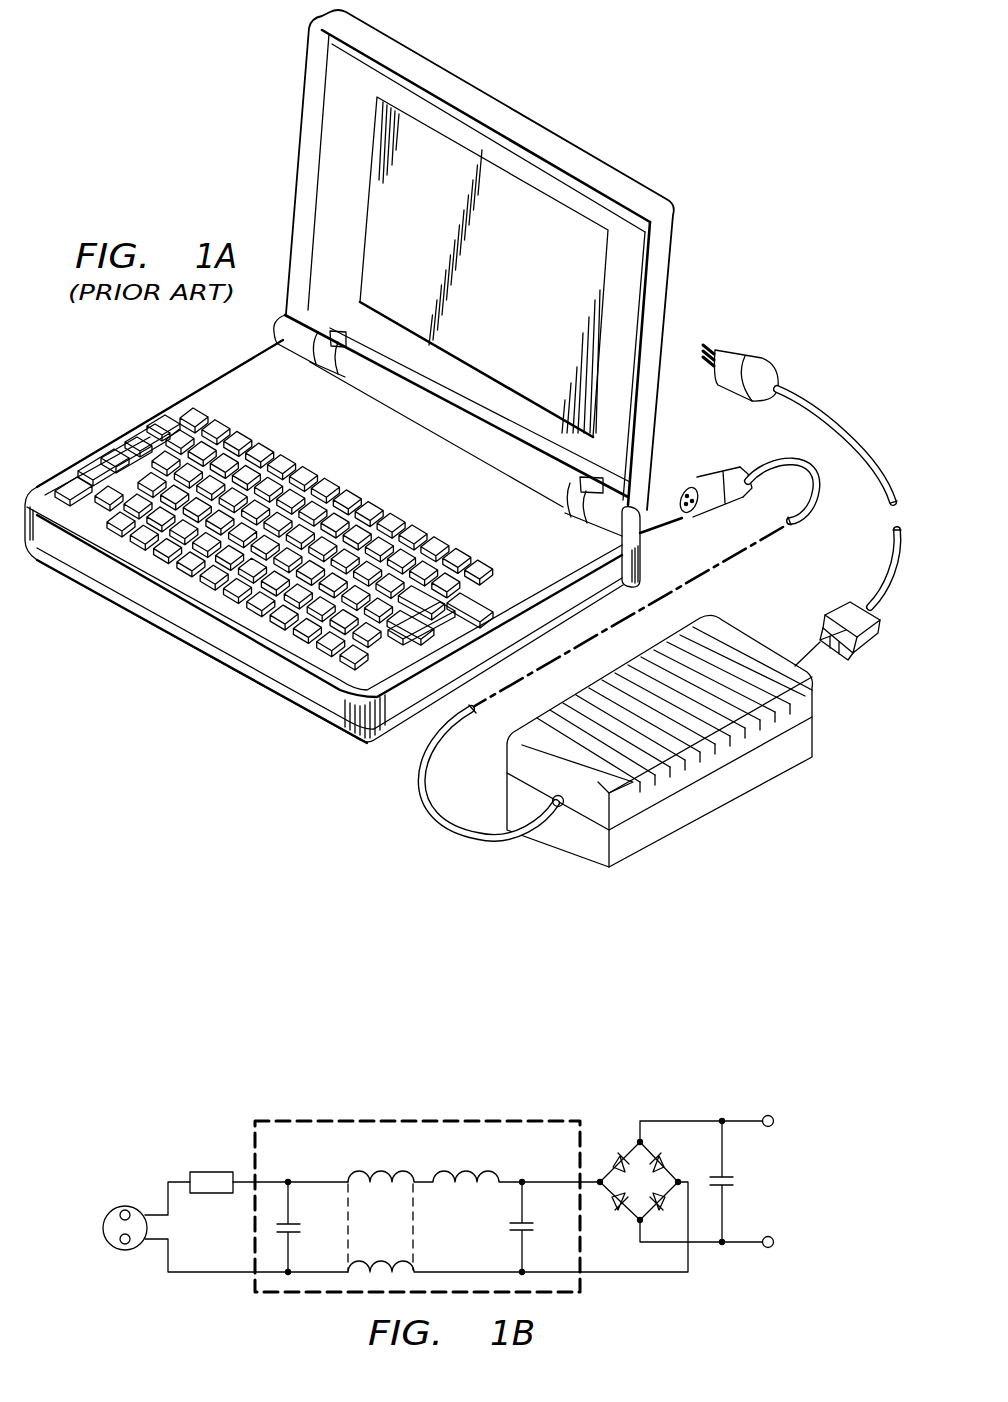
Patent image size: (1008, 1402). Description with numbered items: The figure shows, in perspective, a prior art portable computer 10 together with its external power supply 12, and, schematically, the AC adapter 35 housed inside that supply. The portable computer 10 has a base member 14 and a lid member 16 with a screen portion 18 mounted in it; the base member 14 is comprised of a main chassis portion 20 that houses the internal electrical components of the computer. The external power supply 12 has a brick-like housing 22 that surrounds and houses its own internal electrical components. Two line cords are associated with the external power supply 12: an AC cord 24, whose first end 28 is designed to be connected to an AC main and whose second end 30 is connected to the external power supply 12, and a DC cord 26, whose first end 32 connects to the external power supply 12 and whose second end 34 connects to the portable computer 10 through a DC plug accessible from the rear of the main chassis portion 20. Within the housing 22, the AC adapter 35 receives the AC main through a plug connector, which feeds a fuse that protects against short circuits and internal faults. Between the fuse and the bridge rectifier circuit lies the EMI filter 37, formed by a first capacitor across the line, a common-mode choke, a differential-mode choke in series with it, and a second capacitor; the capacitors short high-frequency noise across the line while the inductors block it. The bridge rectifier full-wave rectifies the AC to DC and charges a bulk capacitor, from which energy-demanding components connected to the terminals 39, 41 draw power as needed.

In FIG. 1A, the portable computer 10 is at (730, 96).
In FIG. 1A, the external power supply 12 is at (795, 805).
In FIG. 1A, the base member 14 is at (351, 745).
In FIG. 1A, the lid member 16 is at (493, 105).
In FIG. 1A, the screen portion 18 is at (530, 274).
In FIG. 1A, the main chassis portion 20 is at (648, 563).
In FIG. 1A, the housing 22 is at (813, 727).
In FIG. 1A, the AC cord 24 is at (811, 410).
In FIG. 1A, the DC cord 26 is at (472, 829).
In FIG. 1A, the first end 28 is at (745, 355).
In FIG. 1A, the second end 30 is at (842, 613).
In FIG. 1A, the first end 32 is at (560, 812).
In FIG. 1A, the second end 34 is at (711, 481).
In FIG. 1B, the AC adapter 35 is at (674, 1068).
In FIG. 1B, the EMI filter 37 is at (420, 1121).
In FIG. 1B, the terminal 39 is at (775, 1118).
In FIG. 1B, the terminal 41 is at (775, 1245).